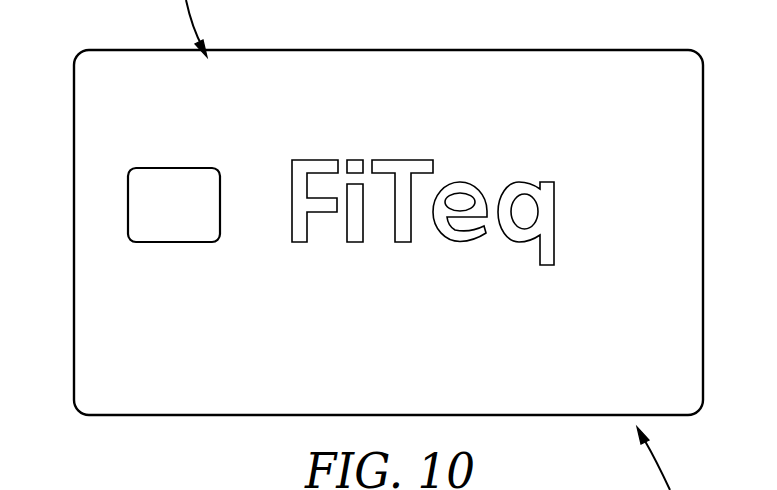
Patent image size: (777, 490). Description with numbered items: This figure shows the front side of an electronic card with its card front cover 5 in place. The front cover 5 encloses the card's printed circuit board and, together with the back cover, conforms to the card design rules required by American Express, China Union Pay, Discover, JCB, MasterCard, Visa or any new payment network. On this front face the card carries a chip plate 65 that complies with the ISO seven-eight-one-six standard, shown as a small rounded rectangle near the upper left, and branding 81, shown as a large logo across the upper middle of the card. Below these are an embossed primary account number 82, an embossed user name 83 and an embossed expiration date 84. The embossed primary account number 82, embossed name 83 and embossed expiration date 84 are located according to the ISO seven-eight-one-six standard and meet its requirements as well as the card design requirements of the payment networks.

The card front cover 5 is at (614, 343).
The 7816 chip plate 65 is at (138, 184).
The branding 81 is at (445, 170).
The embossed primary account number 82 is at (157, 314).
The embossed user name 83 is at (157, 365).
The embossed expiration date 84 is at (553, 361).